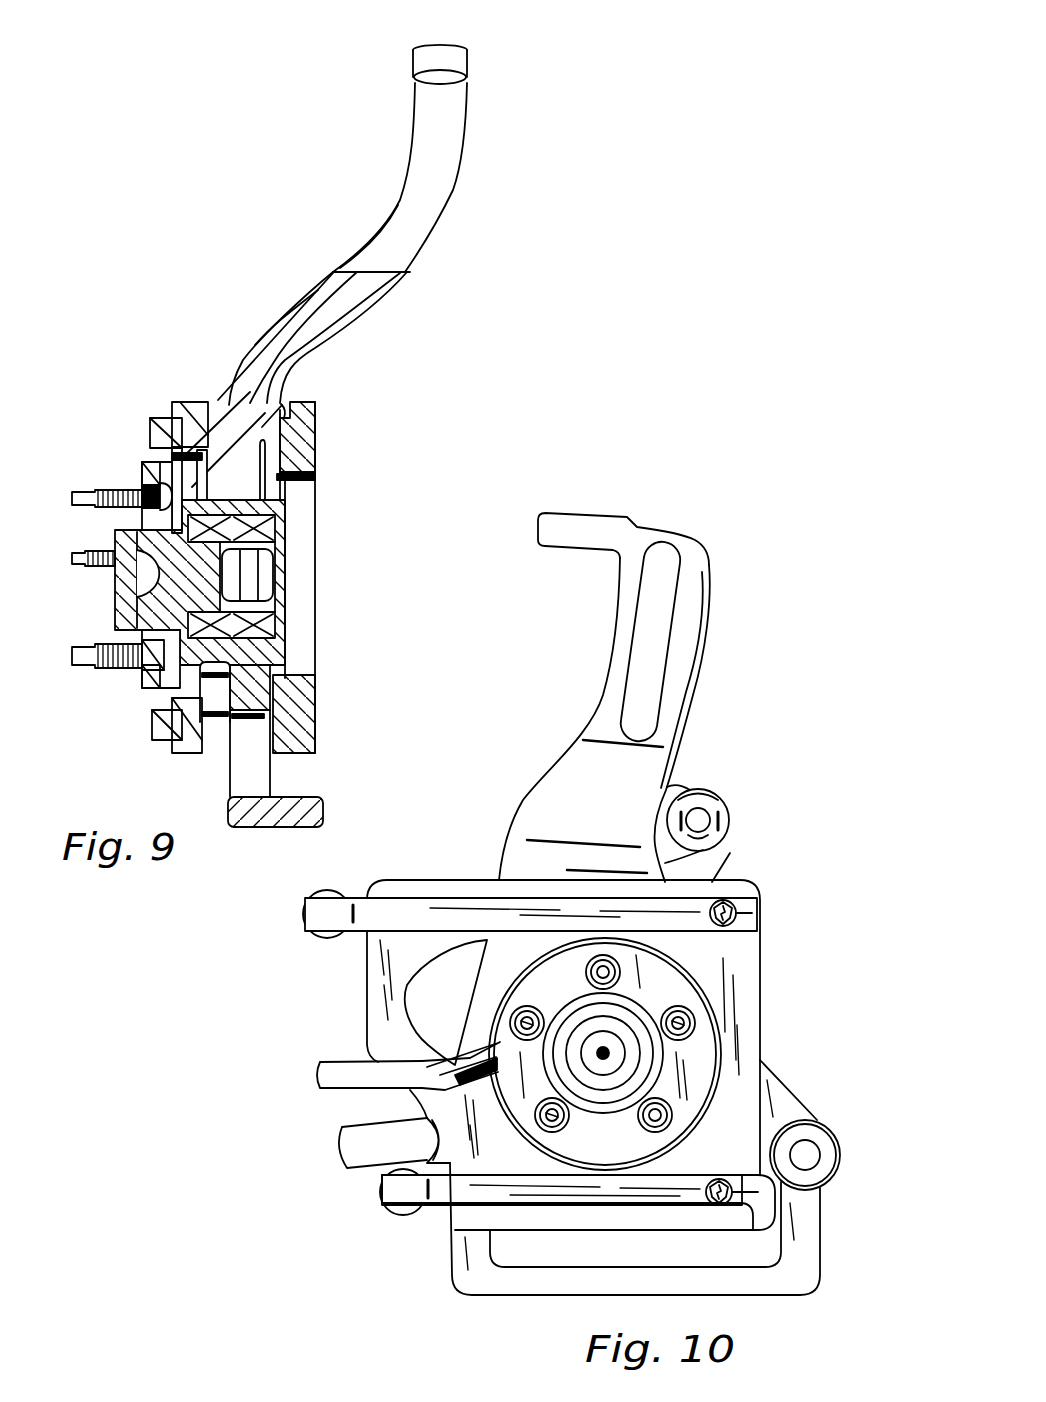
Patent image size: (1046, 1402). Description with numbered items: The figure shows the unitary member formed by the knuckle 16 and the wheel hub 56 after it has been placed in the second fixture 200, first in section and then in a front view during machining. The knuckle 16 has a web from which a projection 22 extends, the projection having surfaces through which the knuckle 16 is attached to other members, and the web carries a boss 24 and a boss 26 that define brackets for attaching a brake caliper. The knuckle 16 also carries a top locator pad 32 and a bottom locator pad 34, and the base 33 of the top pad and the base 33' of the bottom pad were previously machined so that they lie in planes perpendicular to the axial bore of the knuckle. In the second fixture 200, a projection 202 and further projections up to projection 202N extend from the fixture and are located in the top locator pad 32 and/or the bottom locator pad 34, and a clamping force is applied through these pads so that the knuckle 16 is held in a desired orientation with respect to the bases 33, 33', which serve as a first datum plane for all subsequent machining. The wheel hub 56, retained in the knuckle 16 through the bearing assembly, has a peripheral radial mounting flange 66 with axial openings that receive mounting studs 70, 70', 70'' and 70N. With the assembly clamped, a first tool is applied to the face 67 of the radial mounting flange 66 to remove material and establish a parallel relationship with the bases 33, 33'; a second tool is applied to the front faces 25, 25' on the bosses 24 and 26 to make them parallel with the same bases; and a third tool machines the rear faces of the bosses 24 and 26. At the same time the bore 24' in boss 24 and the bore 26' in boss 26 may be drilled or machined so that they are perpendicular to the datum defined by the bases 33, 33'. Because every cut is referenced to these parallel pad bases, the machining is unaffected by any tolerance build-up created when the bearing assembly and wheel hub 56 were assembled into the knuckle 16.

In FIG. 9, the knuckle 16 is at (438, 268).
In FIG. 10, the knuckle 16 is at (522, 775).
In FIG. 9, the projection 22 is at (444, 50).
In FIG. 10, the projection 22 is at (562, 512).
In FIG. 10, the boss 24 is at (732, 827).
In FIG. 10, the bore 24' is at (748, 823).
In FIG. 10, the front face 25 is at (743, 806).
In FIG. 10, the front face 25' is at (827, 1098).
In FIG. 10, the boss 26 is at (815, 1177).
In FIG. 10, the bore 26' is at (834, 1162).
In FIG. 9, the top locator pad 32 is at (173, 458).
In FIG. 9, the base 33 is at (264, 402).
In FIG. 9, the base 33' is at (334, 349).
In FIG. 9, the bottom locator pad 34 is at (283, 472).
In FIG. 9, the wheel hub 56 is at (327, 578).
In FIG. 10, the radial mounting flange 66 is at (722, 1027).
In FIG. 10, the face 67 is at (680, 990).
In FIG. 9, the mounting stud 70 is at (80, 481).
In FIG. 10, the mounting stud 70 is at (585, 969).
In FIG. 9, the mounting stud 70' is at (65, 547).
In FIG. 10, the mounting stud 70' is at (485, 1004).
In FIG. 9, the mounting stud 70'' is at (78, 643).
In FIG. 10, the mounting stud 70'' is at (580, 1128).
In FIG. 10, the mounting stud 70N is at (672, 1007).
In FIG. 9, the second fixture 200 is at (382, 446).
In FIG. 10, the second fixture 200 is at (561, 1087).
In FIG. 9, the projection 202 is at (190, 402).
In FIG. 9, the projection 202N is at (300, 400).